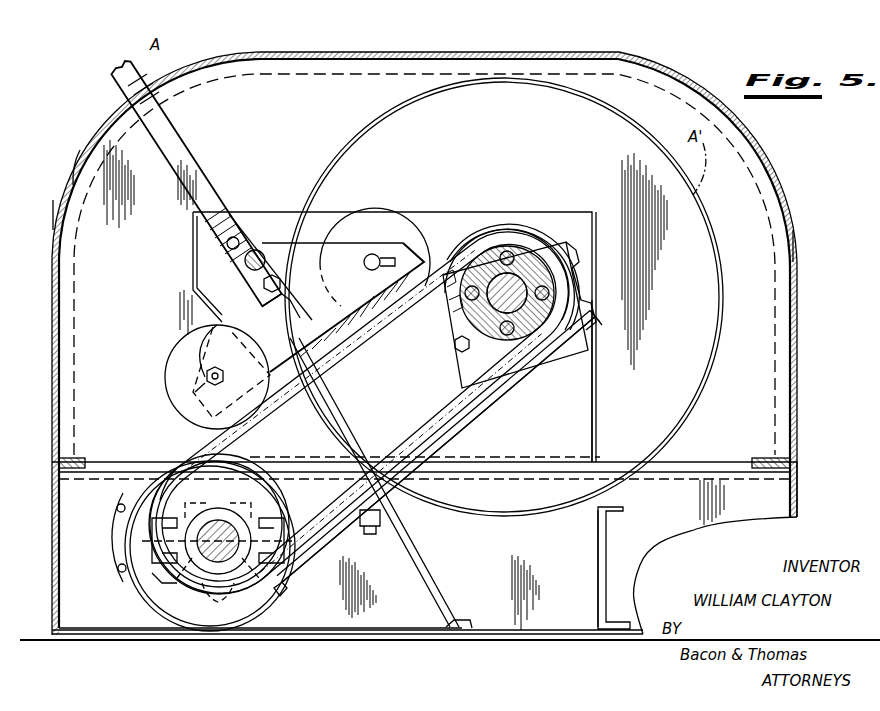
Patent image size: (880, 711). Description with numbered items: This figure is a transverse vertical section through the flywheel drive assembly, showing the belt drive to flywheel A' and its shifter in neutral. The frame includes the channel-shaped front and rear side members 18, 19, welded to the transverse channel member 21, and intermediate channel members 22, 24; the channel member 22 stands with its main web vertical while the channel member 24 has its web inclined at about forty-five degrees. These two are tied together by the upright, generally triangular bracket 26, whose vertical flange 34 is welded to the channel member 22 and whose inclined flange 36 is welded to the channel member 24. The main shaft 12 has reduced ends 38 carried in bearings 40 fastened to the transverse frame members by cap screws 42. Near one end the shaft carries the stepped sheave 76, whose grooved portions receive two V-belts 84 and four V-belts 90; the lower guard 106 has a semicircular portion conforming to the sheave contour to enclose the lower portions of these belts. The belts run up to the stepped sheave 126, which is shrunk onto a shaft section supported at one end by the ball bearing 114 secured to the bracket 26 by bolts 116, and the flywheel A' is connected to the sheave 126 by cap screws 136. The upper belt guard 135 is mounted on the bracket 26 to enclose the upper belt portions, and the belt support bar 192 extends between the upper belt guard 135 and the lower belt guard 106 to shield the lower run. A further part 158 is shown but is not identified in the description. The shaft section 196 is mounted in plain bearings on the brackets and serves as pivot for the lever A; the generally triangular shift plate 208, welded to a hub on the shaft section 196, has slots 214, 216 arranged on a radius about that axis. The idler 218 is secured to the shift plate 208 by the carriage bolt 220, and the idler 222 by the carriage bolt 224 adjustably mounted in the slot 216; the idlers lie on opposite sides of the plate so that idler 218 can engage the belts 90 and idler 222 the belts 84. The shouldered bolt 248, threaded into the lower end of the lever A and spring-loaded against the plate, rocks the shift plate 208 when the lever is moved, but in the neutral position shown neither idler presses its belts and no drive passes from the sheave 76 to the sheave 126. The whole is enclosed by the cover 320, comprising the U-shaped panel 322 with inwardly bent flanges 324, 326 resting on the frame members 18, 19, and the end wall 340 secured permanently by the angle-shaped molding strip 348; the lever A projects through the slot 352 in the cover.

The main shaft 12 is at (160, 582).
The front frame member 18 is at (52, 538).
The rear frame member 19 is at (797, 488).
The transverse channel member 21 is at (319, 638).
The intermediate channel member 22 is at (612, 512).
The intermediate channel member 24 is at (385, 540).
The bracket 26 is at (190, 233).
The vertical flange 34 is at (598, 378).
The inclined flange 36 is at (431, 578).
The reduced ends 38 is at (218, 521).
The bearings 40 is at (142, 542).
The cap screws 42 is at (135, 586).
The stepped sheave 76 is at (272, 509).
The V-belts 84 is at (248, 438).
The V-belts 90 is at (200, 447).
The lower belt guard 106 is at (117, 512).
The ball bearing 114 is at (551, 360).
The bolts 116 is at (458, 350).
The stepped sheave 126 is at (456, 338).
The upper belt guard 135 is at (527, 238).
The cap screws 136 is at (498, 262).
The pulley flange 158 is at (525, 276).
The belt support bar 192 is at (514, 383).
The shaft section 196 is at (265, 222).
The shift plate 208 is at (322, 243).
The slot 214 is at (390, 258).
The slot 216 is at (198, 394).
The idler 218 is at (418, 240).
The carriage bolt 220 is at (378, 270).
The idler 222 is at (180, 366).
The carriage bolt 224 is at (210, 340).
The shouldered bolt 248 is at (294, 314).
The cover 320 is at (647, 54).
The U-shaped panel 322 is at (796, 243).
The flange 324 is at (80, 462).
The flange 326 is at (765, 460).
The end wall 340 is at (298, 114).
The angle-shaped molding strip 348 is at (58, 200).
The slot 352 is at (100, 131).